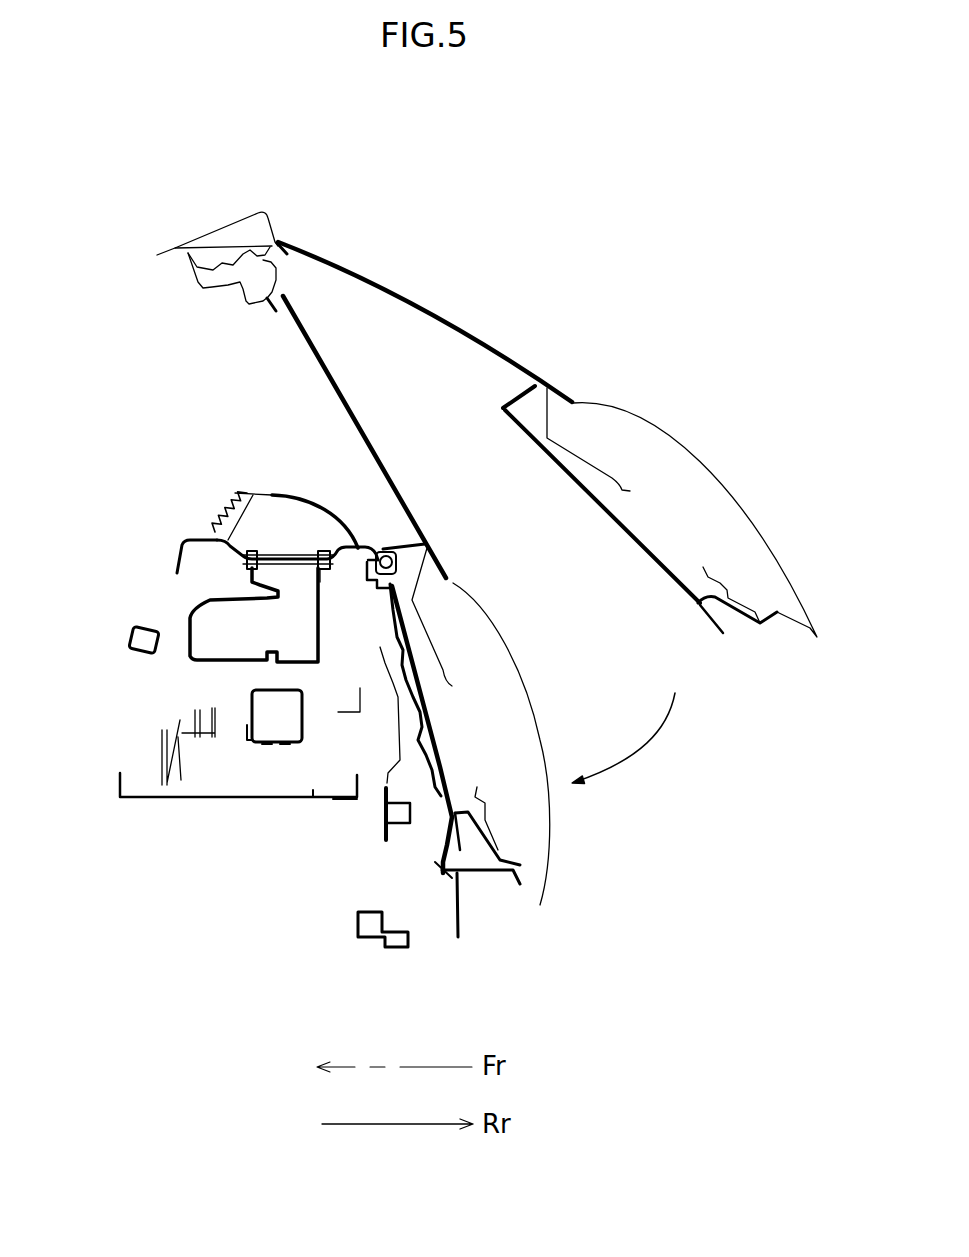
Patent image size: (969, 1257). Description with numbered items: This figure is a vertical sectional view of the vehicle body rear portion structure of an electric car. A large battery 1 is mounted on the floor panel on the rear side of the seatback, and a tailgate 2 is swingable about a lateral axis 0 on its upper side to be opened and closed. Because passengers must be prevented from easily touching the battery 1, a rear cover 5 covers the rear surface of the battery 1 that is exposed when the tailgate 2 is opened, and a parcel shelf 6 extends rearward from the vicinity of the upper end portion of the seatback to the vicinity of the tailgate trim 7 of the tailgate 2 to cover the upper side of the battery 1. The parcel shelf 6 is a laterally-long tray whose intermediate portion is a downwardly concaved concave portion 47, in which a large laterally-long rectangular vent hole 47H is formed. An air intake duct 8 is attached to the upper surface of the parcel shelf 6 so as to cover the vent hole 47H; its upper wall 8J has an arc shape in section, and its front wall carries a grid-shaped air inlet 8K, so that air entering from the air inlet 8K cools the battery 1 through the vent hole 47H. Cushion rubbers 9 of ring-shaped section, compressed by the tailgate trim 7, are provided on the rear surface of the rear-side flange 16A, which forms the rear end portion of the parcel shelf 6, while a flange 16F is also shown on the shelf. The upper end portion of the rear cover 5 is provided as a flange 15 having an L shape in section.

The lateral axis 0 is at (175, 247).
The battery 1 is at (215, 690).
The tailgate 2 is at (598, 331).
The rear cover 5 is at (441, 765).
The parcel shelf 6 is at (168, 542).
The tailgate trim 7 is at (578, 485).
The air intake duct 8 is at (232, 493).
The upper wall 8J is at (298, 503).
The air inlet 8K is at (230, 508).
The cushion rubber 9 is at (378, 548).
The flange 15 is at (365, 585).
The rear-side flange 16A is at (400, 582).
The front portion of bracket 16F is at (178, 562).
The concave portion 47 is at (313, 538).
The vent hole 47H is at (280, 554).